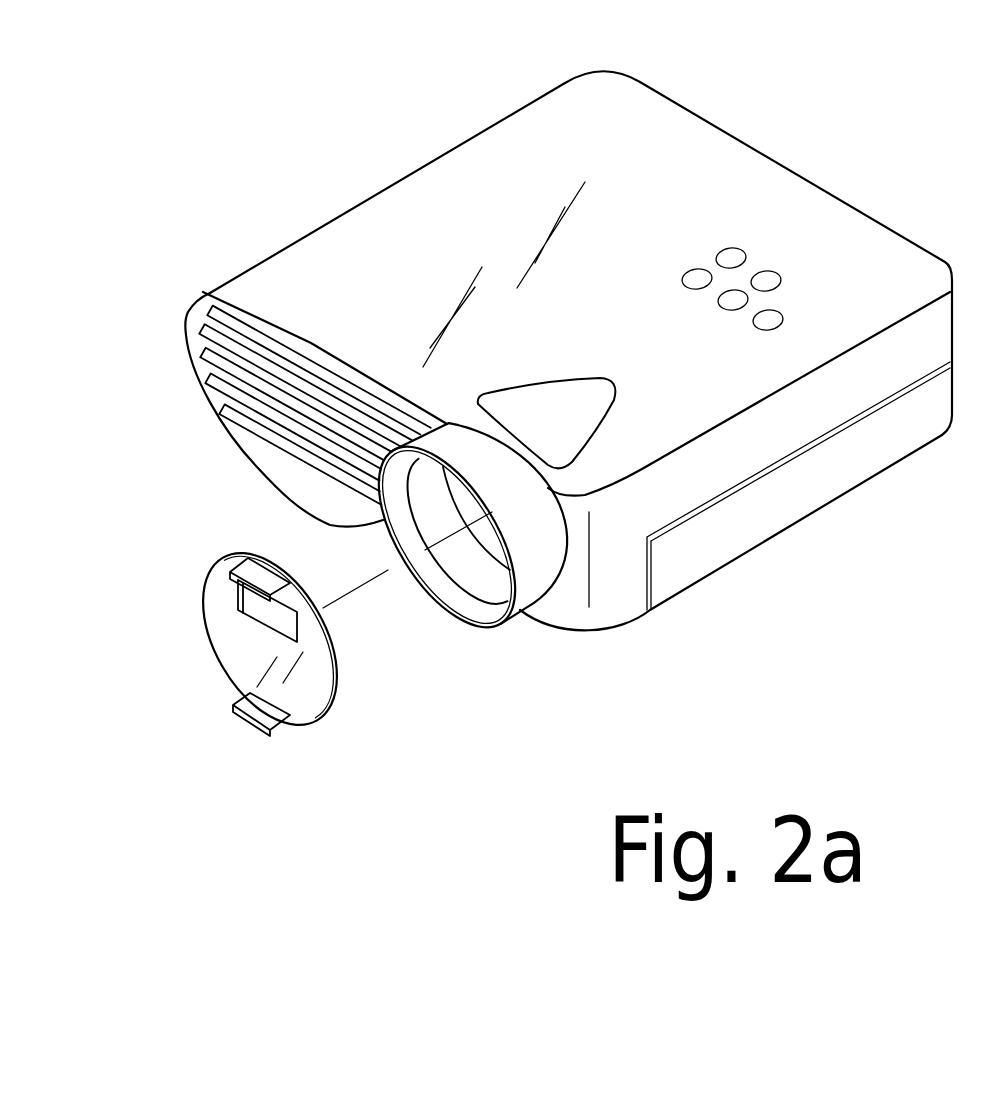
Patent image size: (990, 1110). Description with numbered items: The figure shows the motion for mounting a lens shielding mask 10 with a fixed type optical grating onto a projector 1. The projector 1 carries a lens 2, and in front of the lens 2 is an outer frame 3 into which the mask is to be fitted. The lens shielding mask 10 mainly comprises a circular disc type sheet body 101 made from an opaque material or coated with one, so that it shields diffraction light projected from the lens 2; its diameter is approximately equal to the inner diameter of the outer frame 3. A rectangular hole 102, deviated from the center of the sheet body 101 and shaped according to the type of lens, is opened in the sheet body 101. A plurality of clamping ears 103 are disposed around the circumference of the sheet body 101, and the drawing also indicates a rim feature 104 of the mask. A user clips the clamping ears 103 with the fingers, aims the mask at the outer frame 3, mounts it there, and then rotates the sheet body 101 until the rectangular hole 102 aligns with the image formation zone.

The projector 1 is at (623, 193).
The lens 2 is at (533, 538).
The outer frame 3 is at (400, 523).
The lens shielding mask 10 is at (309, 641).
The sheet body 101 is at (233, 648).
The rectangular hole 102 is at (267, 610).
The clamping ears 103 is at (262, 577).
The cap rim 104 is at (333, 650).